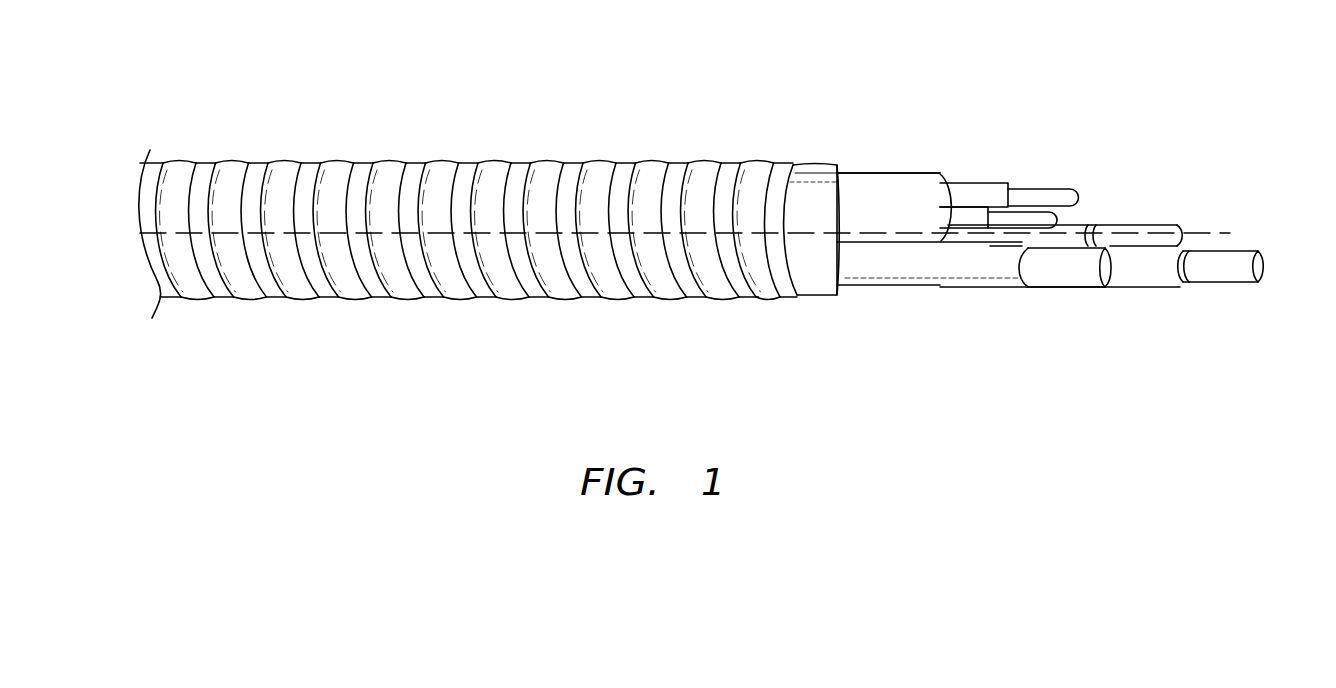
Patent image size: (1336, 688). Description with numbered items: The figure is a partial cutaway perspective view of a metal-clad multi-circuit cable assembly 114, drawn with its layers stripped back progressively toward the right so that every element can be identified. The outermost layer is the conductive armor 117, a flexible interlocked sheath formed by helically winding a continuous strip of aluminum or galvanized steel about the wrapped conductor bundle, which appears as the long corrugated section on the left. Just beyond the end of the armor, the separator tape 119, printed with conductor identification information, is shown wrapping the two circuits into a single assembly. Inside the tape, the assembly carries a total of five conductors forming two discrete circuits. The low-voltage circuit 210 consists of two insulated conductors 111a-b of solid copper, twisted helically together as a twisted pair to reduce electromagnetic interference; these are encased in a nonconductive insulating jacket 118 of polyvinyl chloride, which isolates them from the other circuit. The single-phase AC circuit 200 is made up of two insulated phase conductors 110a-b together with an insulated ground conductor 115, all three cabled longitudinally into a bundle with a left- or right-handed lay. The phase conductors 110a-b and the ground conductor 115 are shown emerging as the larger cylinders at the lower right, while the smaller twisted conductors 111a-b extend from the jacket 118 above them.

The metal-clad multi-circuit cable assembly 114 is at (270, 96).
The conductive armor 117 is at (565, 300).
The separator tape 119 is at (822, 170).
The insulating jacket 118 is at (893, 188).
The Class 2/3 circuit 210 is at (882, 173).
The Class 1 circuit 200 is at (918, 300).
The insulated conductors 111a-b is at (1035, 217).
The insulated phase conductors 110a-b is at (1140, 237).
The insulated ground conductor 115 is at (1203, 277).